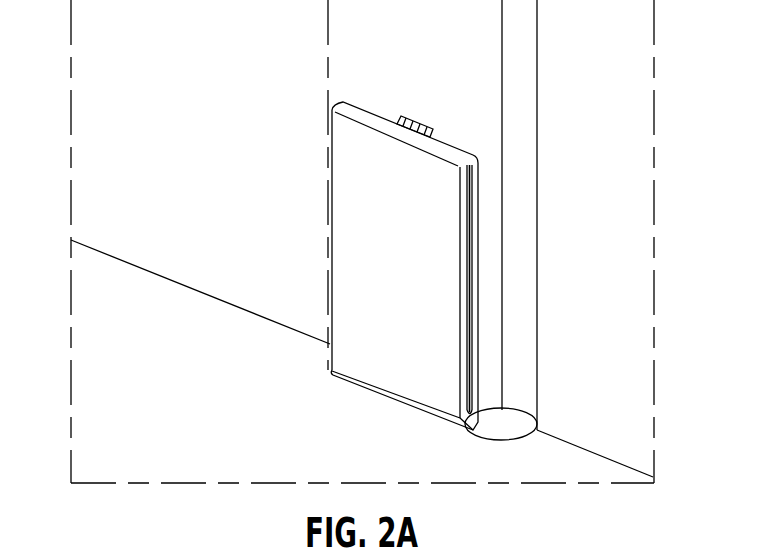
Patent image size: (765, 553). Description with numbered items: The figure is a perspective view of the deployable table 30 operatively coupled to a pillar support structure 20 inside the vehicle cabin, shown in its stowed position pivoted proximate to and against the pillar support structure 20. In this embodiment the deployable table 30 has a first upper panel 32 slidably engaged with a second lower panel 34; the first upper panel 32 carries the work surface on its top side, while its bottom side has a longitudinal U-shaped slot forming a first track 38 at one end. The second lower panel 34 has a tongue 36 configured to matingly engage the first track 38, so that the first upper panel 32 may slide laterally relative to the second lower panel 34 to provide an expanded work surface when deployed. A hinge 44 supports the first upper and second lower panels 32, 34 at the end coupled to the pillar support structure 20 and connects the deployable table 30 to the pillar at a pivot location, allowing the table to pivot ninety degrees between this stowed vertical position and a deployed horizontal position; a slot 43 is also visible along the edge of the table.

The pillar support structure 20 is at (591, 266).
The deployable table 30 is at (371, 298).
The first upper panel 32 is at (453, 337).
The second lower panel 34 is at (473, 251).
The tongue 36 is at (522, 433).
The first track 38 is at (473, 431).
The slot 43 is at (473, 173).
The hinge 44 is at (425, 123).